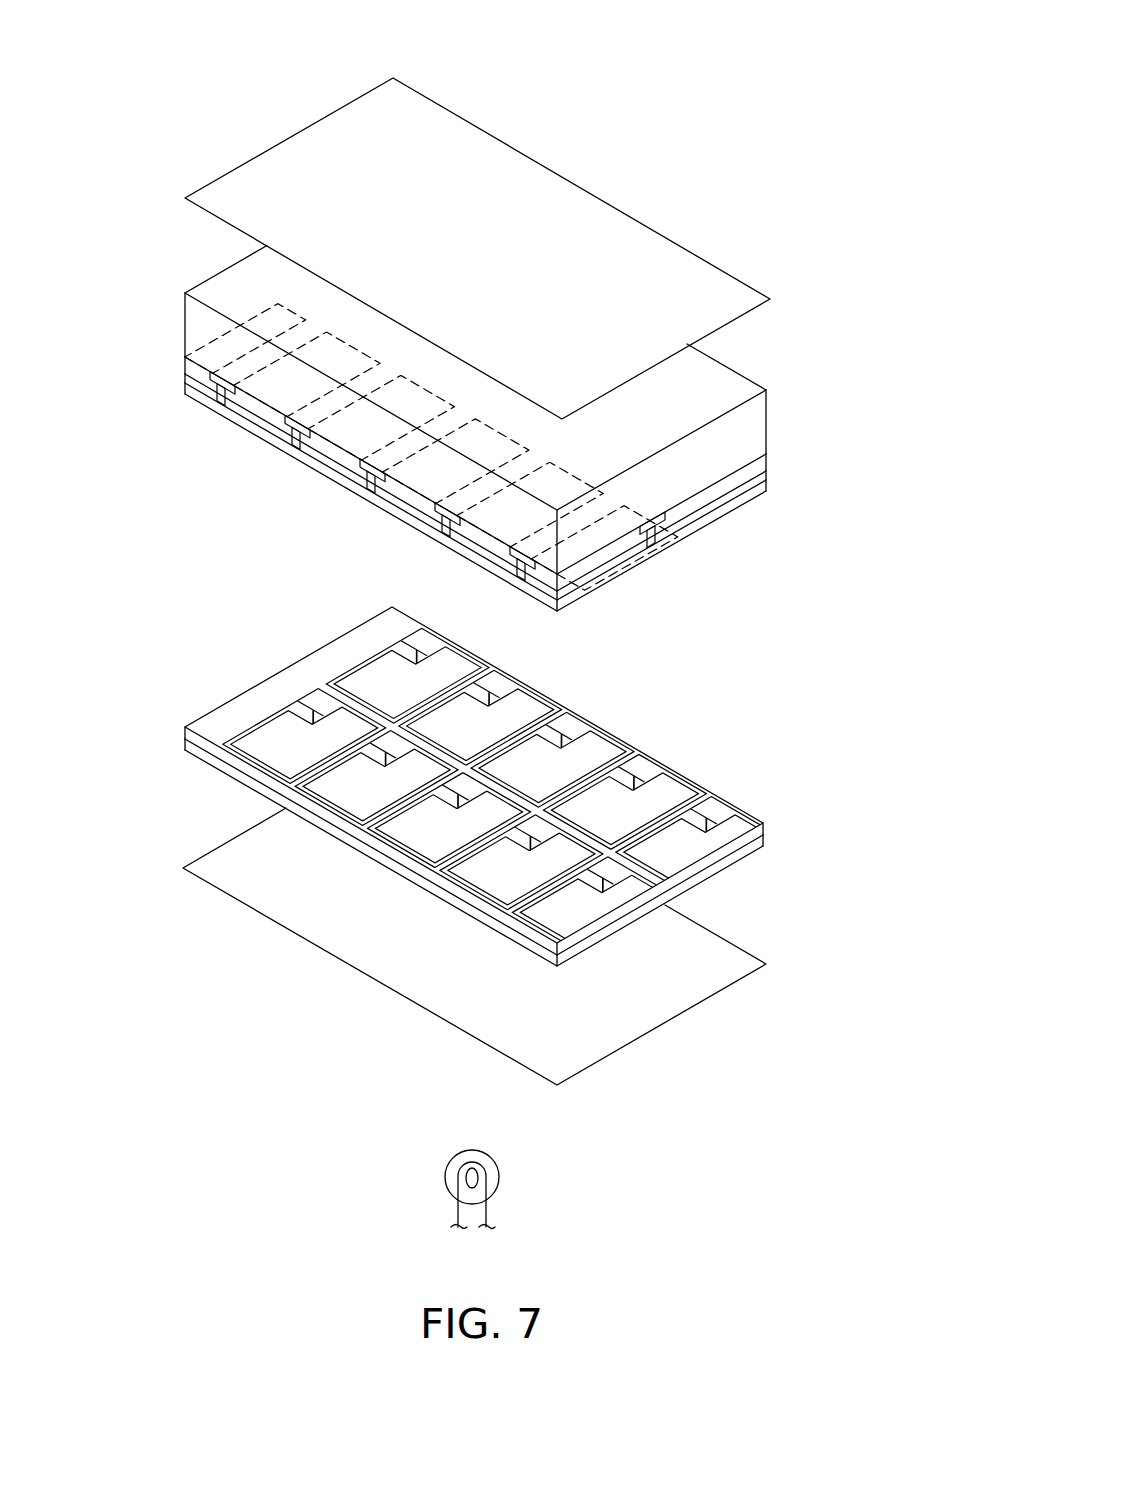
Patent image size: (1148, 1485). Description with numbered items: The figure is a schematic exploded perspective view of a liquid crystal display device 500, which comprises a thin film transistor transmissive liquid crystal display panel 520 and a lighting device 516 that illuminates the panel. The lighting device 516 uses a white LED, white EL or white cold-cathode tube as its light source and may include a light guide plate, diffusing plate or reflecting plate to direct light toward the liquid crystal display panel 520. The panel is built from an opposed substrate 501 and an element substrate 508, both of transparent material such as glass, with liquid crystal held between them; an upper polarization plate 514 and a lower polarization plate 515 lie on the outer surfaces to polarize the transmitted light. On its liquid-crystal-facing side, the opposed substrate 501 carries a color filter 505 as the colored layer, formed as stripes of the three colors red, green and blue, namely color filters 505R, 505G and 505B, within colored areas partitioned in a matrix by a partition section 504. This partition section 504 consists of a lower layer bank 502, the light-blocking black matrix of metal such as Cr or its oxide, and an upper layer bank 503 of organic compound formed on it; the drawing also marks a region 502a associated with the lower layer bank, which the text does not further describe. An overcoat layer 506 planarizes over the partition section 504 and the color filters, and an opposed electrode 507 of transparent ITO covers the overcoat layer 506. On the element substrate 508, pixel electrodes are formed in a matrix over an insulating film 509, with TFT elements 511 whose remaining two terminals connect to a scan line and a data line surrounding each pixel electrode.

The liquid crystal display device 500 is at (682, 89).
The opposed substrate 501 is at (183, 293).
The lower layer bank 502 is at (213, 371).
The opening 502a is at (510, 432).
The upper layer bank 503 is at (220, 401).
The partition section 504 is at (410, 475).
The color filter 505 is at (769, 462).
The blue color filter 505B is at (277, 421).
The red color filter 505R is at (343, 466).
The green color filter 505G is at (417, 506).
The overcoat layer 506 is at (769, 477).
The opposed electrode 507 is at (769, 490).
The element substrate 508 is at (620, 915).
The insulating film 509 is at (768, 826).
The TFT element 511 is at (494, 789).
The upper polarization plate 514 is at (724, 290).
The lower polarization plate 515 is at (675, 1020).
The lighting device 516 is at (500, 1177).
The liquid crystal display panel 520 is at (489, 442).